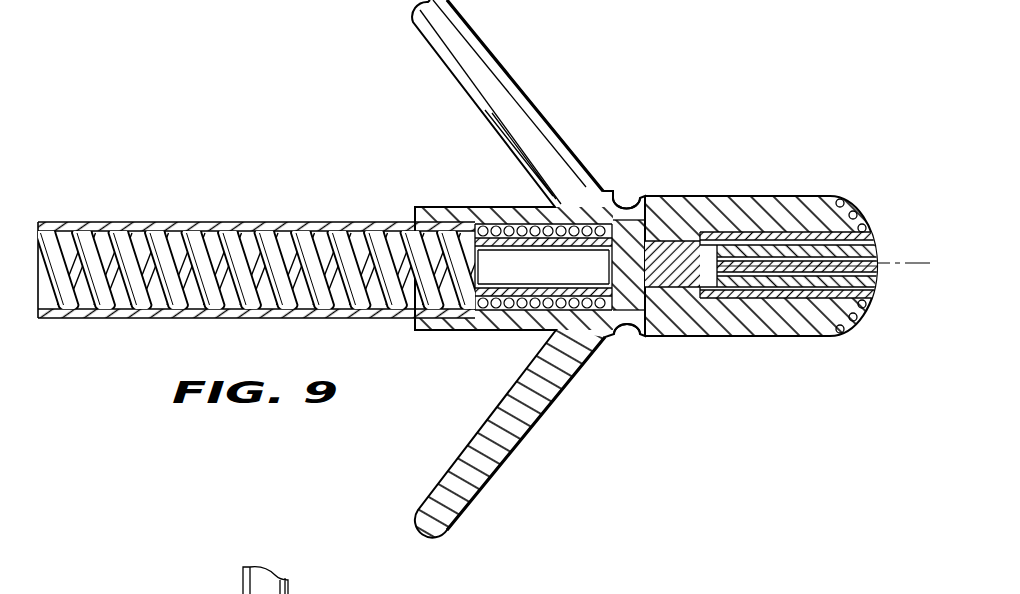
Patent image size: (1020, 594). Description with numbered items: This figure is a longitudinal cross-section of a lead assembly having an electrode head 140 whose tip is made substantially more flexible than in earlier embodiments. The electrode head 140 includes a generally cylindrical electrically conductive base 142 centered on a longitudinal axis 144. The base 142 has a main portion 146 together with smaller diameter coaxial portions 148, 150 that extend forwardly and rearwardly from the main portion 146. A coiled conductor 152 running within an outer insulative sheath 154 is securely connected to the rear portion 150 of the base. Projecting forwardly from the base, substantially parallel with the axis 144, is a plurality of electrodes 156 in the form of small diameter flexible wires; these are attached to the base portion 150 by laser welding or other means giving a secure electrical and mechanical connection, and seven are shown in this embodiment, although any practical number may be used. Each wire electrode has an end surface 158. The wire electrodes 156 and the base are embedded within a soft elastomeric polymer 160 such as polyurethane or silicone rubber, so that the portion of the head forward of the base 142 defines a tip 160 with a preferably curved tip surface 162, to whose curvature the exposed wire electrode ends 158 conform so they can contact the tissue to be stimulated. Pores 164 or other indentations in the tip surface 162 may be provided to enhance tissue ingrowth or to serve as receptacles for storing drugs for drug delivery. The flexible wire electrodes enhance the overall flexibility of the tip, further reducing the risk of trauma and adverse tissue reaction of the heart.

The electrode head 140 is at (676, 136).
The electrically conductive base 142 is at (630, 325).
The longitudinal axis 144 is at (905, 262).
The main portion 146 is at (628, 207).
The coaxial portion 148 is at (682, 290).
The coaxial portion 150 is at (500, 331).
The coiled conductor 152 is at (258, 227).
The outer insulative sheath 154 is at (183, 190).
The electrodes 156 is at (780, 232).
The end surface 158 is at (870, 231).
The soft elastomeric polymer 160 is at (708, 214).
The tip surface 162 is at (875, 280).
The pores 164 is at (846, 204).